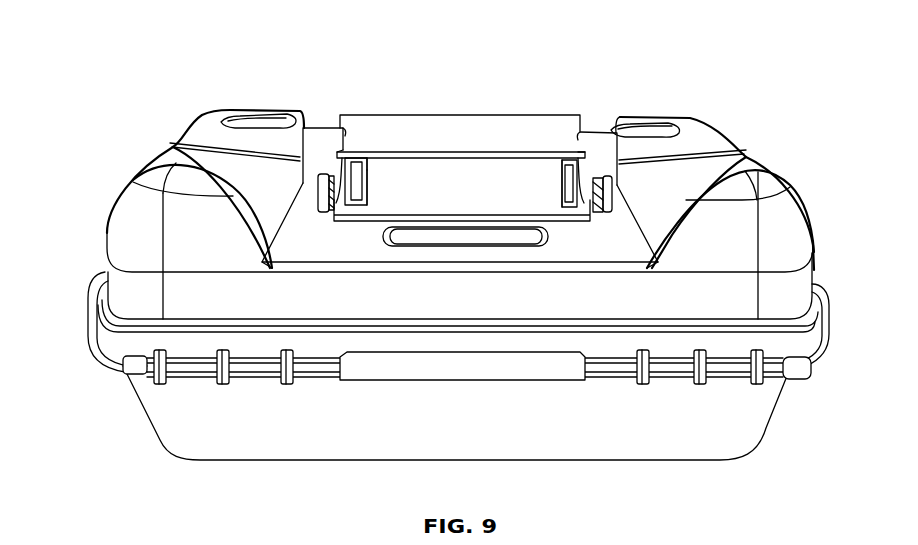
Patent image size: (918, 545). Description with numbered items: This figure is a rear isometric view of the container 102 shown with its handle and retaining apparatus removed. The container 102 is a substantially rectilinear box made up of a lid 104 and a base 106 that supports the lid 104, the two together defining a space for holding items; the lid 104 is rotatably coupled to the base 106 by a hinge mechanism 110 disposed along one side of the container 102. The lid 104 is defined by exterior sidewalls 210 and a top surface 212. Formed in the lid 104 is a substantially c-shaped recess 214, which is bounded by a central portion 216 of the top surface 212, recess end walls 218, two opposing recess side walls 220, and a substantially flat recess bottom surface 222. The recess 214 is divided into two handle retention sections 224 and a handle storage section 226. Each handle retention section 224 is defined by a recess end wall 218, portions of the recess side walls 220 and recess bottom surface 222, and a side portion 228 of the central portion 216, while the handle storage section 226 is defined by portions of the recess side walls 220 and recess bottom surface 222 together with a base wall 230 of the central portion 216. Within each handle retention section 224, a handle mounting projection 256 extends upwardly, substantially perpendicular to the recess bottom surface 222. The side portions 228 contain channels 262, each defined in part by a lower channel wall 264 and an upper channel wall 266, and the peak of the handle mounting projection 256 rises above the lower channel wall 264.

The container 102 is at (113, 151).
The lid 104 is at (123, 218).
The base 106 is at (172, 430).
The hinge mechanism 110 is at (548, 370).
The exterior sidewalls 210 is at (143, 287).
The top surface 212 is at (635, 177).
The recess 214 is at (395, 140).
The central portion 216 is at (450, 130).
The recess end walls 218 is at (313, 140).
The recess side walls 220 is at (297, 145).
The recess bottom surface 222 is at (337, 243).
The handle retention sections 224 is at (330, 124).
The handle storage section 226 is at (491, 254).
The side portions 228 is at (345, 151).
The base wall 230 is at (477, 199).
The handle mounting projection 256 is at (318, 184).
The channels 262 is at (360, 166).
The lower channel wall 264 is at (364, 190).
The upper channel wall 266 is at (396, 168).